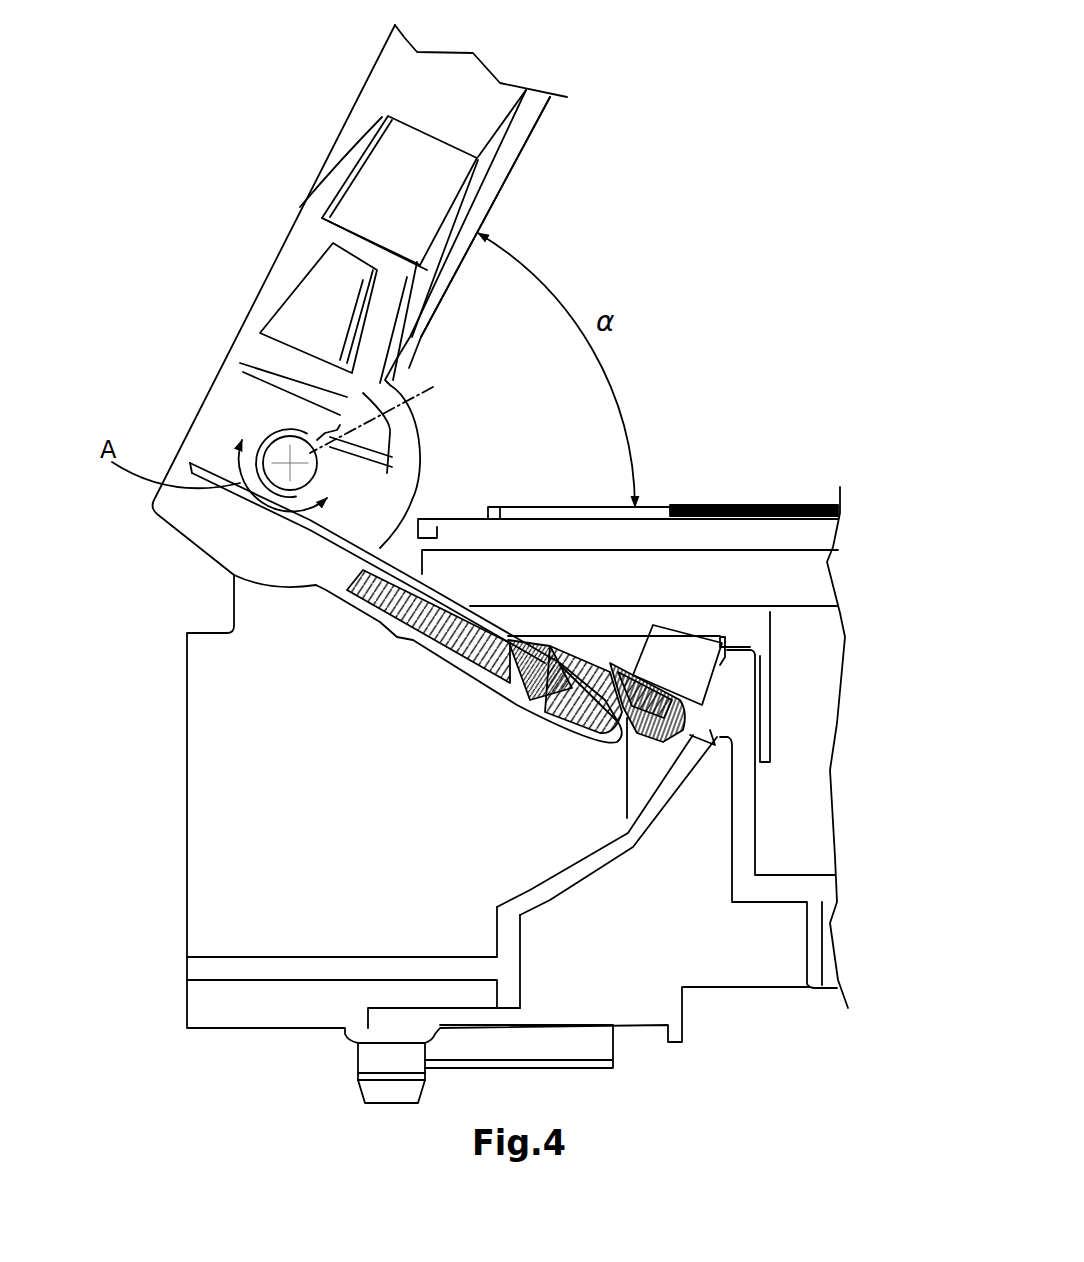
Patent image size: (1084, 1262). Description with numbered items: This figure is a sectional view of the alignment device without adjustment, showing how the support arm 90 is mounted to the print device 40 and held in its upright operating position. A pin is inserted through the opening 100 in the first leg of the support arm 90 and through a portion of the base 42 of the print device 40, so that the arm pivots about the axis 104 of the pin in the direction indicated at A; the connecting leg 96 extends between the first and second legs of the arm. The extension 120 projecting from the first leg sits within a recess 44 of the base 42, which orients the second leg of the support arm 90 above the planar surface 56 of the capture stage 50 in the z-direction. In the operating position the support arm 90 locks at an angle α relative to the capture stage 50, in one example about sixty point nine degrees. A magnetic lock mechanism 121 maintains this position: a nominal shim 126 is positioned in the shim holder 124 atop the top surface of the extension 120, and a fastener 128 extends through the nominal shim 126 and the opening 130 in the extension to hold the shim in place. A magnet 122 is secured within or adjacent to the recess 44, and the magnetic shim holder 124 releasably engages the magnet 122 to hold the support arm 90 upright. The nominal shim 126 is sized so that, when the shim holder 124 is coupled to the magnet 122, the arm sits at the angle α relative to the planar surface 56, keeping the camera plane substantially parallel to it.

The print device 40 is at (176, 721).
The base 42 is at (277, 807).
The recess 44 is at (516, 854).
The capture stage 50 is at (800, 494).
The planar surface 56 is at (753, 507).
The support arm 90 is at (505, 193).
The connecting leg 96 is at (308, 197).
The opening 100 is at (266, 425).
The axis 104 is at (396, 411).
The extension 120 is at (512, 673).
The magnetic lock mechanism 121 is at (695, 715).
The magnet 122 is at (680, 660).
The shim holder 124 is at (617, 647).
The nominal shim 126 is at (607, 665).
The fastener 128 is at (547, 637).
The opening 130 is at (558, 715).